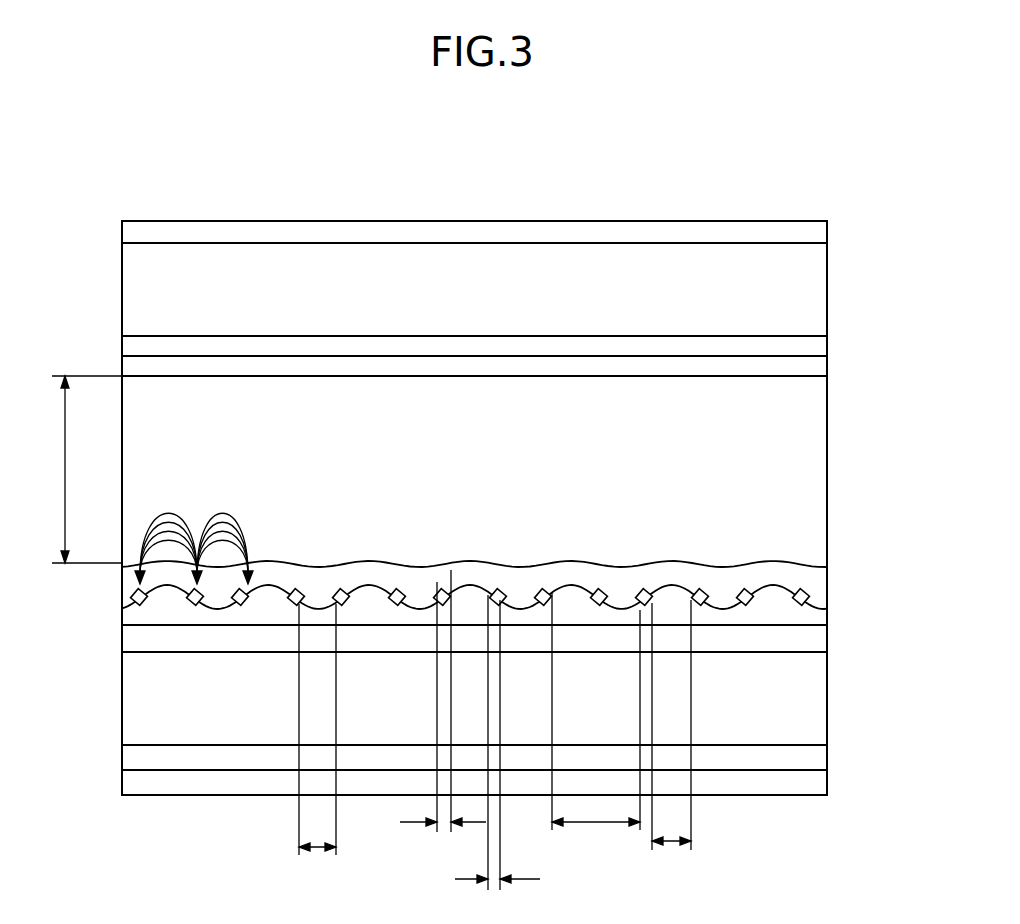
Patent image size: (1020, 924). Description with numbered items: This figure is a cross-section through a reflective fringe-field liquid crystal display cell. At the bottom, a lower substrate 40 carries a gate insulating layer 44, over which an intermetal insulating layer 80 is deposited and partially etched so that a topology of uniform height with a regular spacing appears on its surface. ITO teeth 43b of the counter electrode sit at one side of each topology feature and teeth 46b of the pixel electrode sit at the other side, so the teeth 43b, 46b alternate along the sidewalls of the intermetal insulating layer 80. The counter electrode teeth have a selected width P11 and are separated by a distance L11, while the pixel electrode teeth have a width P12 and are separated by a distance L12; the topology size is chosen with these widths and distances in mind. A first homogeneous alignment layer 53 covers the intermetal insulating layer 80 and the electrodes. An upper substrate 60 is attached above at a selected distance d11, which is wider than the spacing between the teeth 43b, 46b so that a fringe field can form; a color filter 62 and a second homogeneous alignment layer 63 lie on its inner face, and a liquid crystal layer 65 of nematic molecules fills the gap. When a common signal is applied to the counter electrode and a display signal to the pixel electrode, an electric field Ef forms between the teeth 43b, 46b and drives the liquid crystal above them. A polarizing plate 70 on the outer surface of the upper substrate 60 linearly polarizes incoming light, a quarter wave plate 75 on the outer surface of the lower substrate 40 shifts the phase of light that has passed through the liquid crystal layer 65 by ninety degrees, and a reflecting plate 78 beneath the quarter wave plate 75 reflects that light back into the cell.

The polarizing plate 70 is at (818, 240).
The upper substrate 60 is at (818, 290).
The color filter 62 is at (818, 347).
The second homogeneous alignment layer 63 is at (818, 374).
The liquid crystal layer 65 is at (818, 460).
The first homogeneous alignment layer 53 is at (816, 589).
The intermetal insulating layer 80 is at (765, 617).
The teeth of the counter electrode 43b is at (746, 589).
The teeth of the pixel electrode 46b is at (805, 589).
The gate insulating layer 44 is at (816, 642).
The lower substrate 40 is at (816, 710).
The quarter wave plate 75 is at (816, 755).
The reflecting plate 78 is at (816, 786).
The electric field Ef is at (194, 532).
The distance between substrates d11 is at (77, 469).
The distance between counter electrode teeth L11 is at (491, 747).
The distance between pixel electrode teeth L12 is at (596, 728).
The width of counter electrode teeth P11 is at (443, 718).
The width of pixel electrode teeth P12 is at (497, 759).